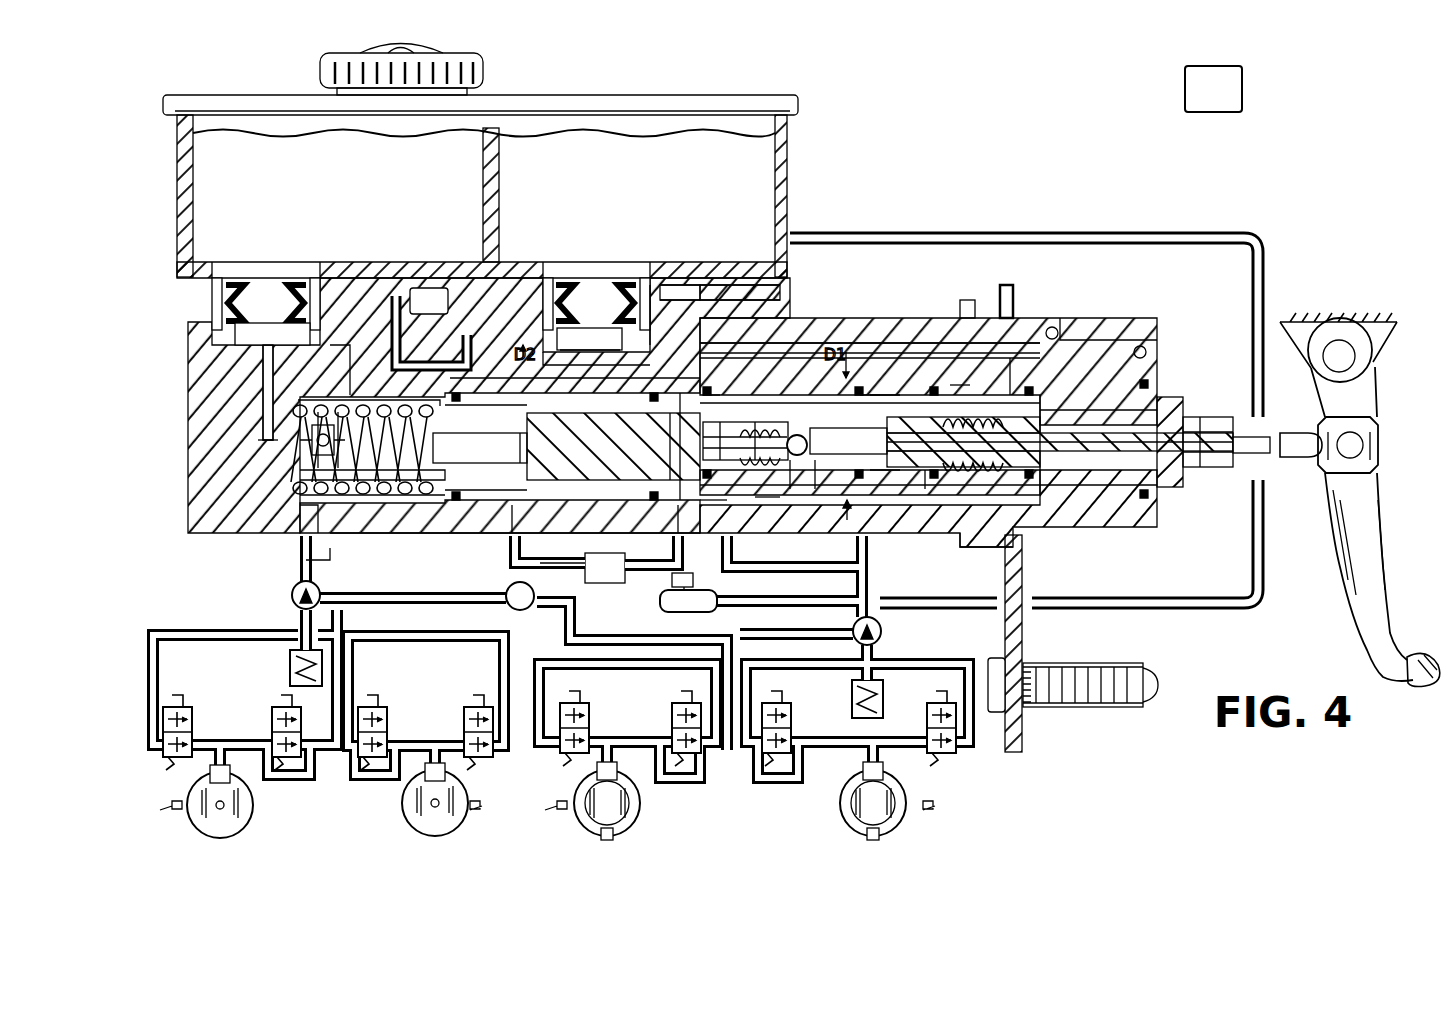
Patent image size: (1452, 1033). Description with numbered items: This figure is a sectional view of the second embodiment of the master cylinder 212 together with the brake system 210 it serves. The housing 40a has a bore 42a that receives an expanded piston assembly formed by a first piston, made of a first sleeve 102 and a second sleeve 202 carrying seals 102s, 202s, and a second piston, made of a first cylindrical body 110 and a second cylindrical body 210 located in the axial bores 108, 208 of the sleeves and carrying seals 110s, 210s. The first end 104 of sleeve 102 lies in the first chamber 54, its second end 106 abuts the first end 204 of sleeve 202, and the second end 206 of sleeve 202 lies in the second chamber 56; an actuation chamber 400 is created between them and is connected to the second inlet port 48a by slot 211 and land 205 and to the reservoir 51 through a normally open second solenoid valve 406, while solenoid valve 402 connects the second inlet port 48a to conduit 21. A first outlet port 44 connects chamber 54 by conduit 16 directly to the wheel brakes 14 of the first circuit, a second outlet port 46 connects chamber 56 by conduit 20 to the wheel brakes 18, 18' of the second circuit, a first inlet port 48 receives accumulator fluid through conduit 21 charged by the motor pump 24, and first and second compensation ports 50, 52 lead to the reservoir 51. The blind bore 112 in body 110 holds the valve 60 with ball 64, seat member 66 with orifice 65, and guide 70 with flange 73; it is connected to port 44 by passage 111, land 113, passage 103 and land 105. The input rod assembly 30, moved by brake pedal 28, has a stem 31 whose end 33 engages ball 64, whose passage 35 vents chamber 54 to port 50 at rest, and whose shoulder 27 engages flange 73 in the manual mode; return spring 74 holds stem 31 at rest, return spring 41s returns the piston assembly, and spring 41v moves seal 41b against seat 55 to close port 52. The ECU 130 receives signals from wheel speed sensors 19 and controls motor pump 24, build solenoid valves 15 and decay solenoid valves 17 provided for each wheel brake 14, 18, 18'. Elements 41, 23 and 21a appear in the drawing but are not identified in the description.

The reservoir 51 is at (790, 151).
The master cylinder 212 is at (1190, 298).
The spring 41 is at (317, 497).
The spring 41v is at (283, 398).
The seal 41b is at (300, 438).
The bore 42a is at (262, 358).
The second compensation port 52 is at (293, 470).
The seat 55 is at (303, 497).
The return spring 41s is at (365, 398).
The housing 40a is at (352, 360).
The second outlet port 46 is at (323, 500).
The actuation chamber 400 is at (655, 446).
The first outlet port 44 is at (857, 487).
The end of stem 33 is at (797, 434).
The stem 31 is at (1118, 427).
The seals 110s is at (925, 413).
The passage 35 is at (1172, 410).
The input rod assembly 30 is at (1298, 460).
The brake pedal 28 is at (1372, 518).
The ECU 130 is at (1242, 102).
The second solenoid valve 406 is at (429, 288).
The solenoid valve 402 is at (606, 583).
The first chamber 54 is at (1017, 517).
The conduit 20 is at (342, 575).
The motor pump 24 is at (520, 610).
The conduit 16 is at (783, 568).
The conduit 21 is at (692, 590).
The solenoid 23 is at (672, 582).
The decay solenoid valve 17 is at (181, 708).
The build solenoid valve 15 is at (272, 720).
The wheel brake 18 is at (241, 801).
The wheel brake 18' is at (406, 799).
The wheel brake 14 is at (633, 810).
The wheel speed sensor 19 is at (168, 816).
The second end of sleeve 206 is at (538, 345).
The seals 202s is at (556, 322).
The seals 210s is at (582, 350).
The axial bore 208 is at (615, 300).
The second sleeve 202 is at (645, 330).
The first end of sleeve 204 is at (665, 320).
The second end of sleeve 106 is at (690, 263).
The first sleeve 102 is at (1010, 300).
The seals 102s is at (832, 390).
The flange 73 is at (870, 395).
The first cylindrical body 110 is at (938, 400).
The axial bore 108 is at (960, 385).
The seat member 66 is at (880, 395).
The shoulder 27 is at (966, 300).
The valve 60 is at (1020, 365).
The first end 104 is at (1060, 385).
The first compensation port 50 is at (1105, 328).
The blind bore 112 is at (713, 395).
The ball 64 is at (727, 430).
The orifice 65 is at (760, 422).
The second cylindrical body 210 is at (680, 393).
The second chamber 56 is at (437, 505).
The second inlet port 48a is at (525, 537).
The slot 211 is at (596, 550).
The land 205 is at (565, 569).
The port 21a is at (674, 566).
The first inlet port 48 is at (692, 535).
The land 105 is at (765, 505).
The passage 111 is at (795, 470).
The land 113 is at (820, 470).
The passage 103 is at (858, 480).
The guide 70 is at (930, 480).
The return spring 74 is at (968, 500).